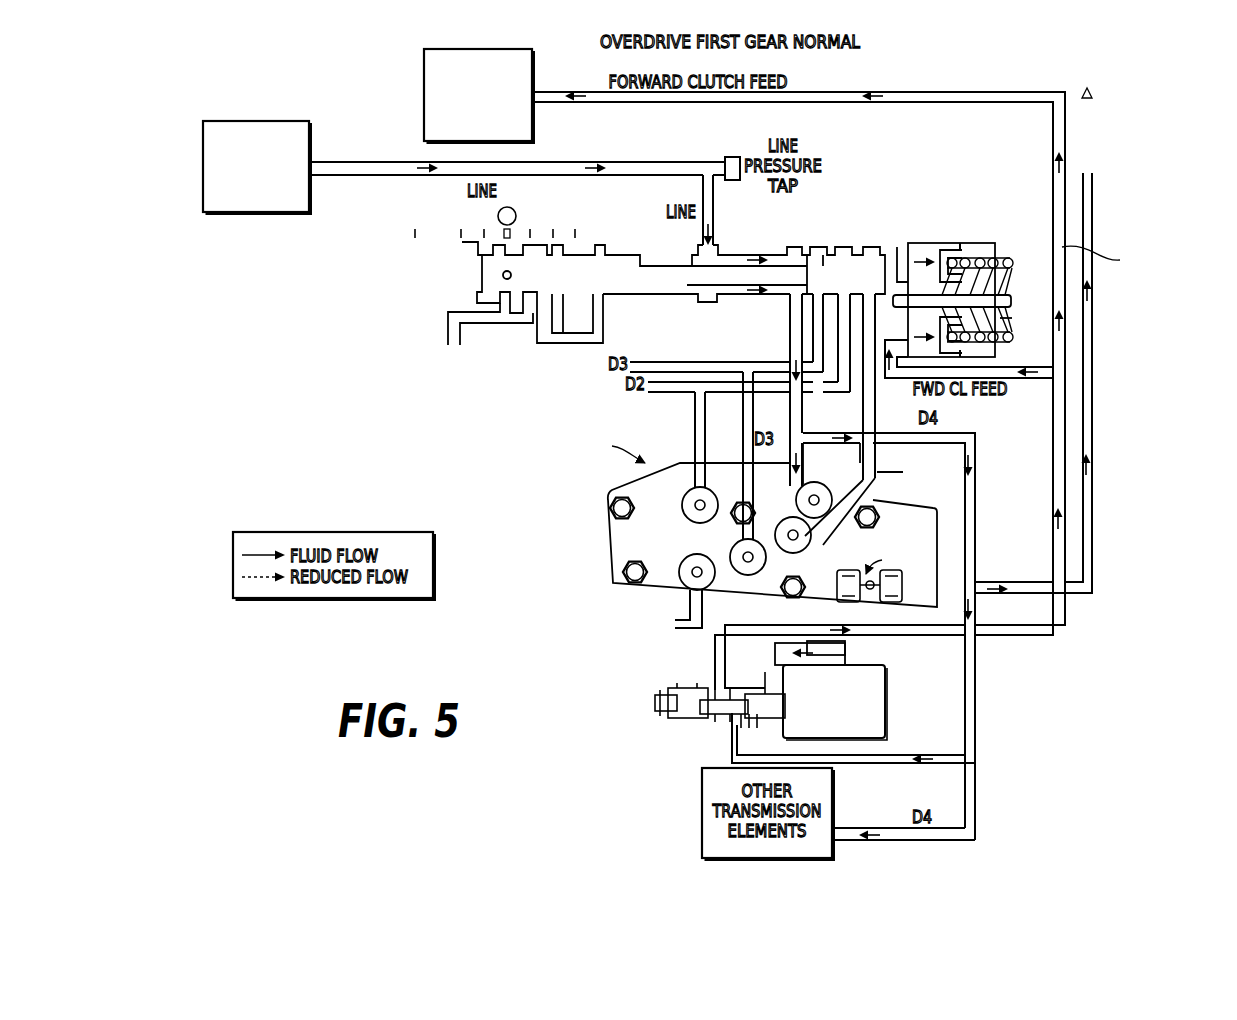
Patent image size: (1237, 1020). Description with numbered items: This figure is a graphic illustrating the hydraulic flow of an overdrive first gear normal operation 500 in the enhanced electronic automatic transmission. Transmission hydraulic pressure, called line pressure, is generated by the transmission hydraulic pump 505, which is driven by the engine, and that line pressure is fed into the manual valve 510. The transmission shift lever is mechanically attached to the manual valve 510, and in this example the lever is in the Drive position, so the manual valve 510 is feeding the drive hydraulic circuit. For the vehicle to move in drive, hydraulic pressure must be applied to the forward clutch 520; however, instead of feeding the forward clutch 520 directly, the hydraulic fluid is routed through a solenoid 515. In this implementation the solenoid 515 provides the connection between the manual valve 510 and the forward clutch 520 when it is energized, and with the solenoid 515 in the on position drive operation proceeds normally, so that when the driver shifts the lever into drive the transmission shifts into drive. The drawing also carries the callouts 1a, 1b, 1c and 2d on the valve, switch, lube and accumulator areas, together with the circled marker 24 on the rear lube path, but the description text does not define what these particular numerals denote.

The transmission hydraulic pump 505 is at (253, 120).
The forward clutch 520 is at (424, 127).
The manual valve 510 is at (647, 275).
The solenoid 515 is at (873, 686).
The overdrive first gear normal 500 is at (1143, 388).
The rear lube circuit 24 is at (1092, 340).
The manual valve 1a is at (798, 236).
The TFP switch assembly 1b is at (602, 494).
The rear lube 1c is at (1066, 311).
The forward clutch accumulator 2d is at (980, 190).